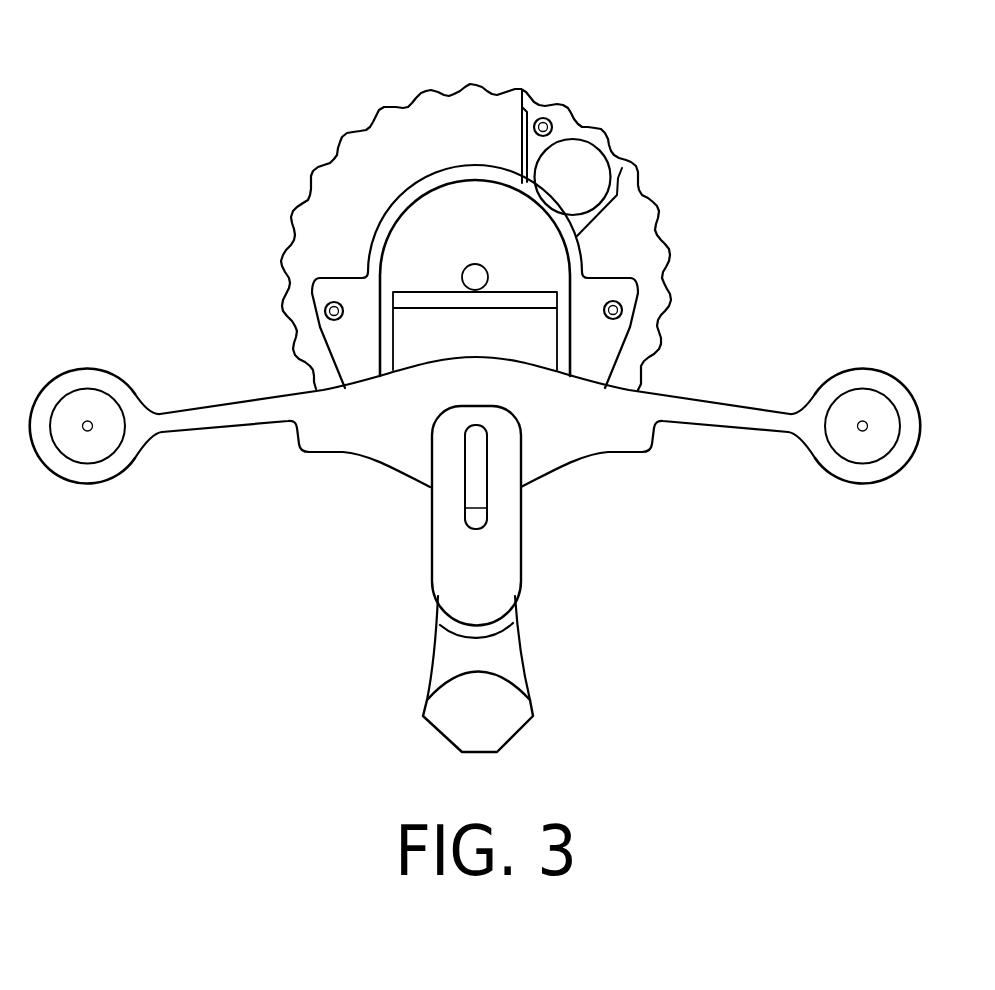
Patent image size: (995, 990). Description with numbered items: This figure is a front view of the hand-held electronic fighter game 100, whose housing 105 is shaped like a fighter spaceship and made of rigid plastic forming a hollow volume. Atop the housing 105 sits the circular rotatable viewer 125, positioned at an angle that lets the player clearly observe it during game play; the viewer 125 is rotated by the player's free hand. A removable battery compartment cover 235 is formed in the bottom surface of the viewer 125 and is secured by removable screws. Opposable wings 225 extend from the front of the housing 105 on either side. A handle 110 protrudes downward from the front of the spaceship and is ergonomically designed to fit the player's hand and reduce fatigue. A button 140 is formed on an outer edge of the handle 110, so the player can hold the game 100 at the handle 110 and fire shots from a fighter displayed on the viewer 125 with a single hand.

The hand-held electronic fighter game 100 is at (222, 77).
The rotatable viewer 125 is at (422, 88).
The removable battery compartment cover 235 is at (580, 161).
The housing 105 is at (300, 451).
The opposable wings 225 is at (105, 371).
The button 140 is at (477, 462).
The handle 110 is at (437, 657).